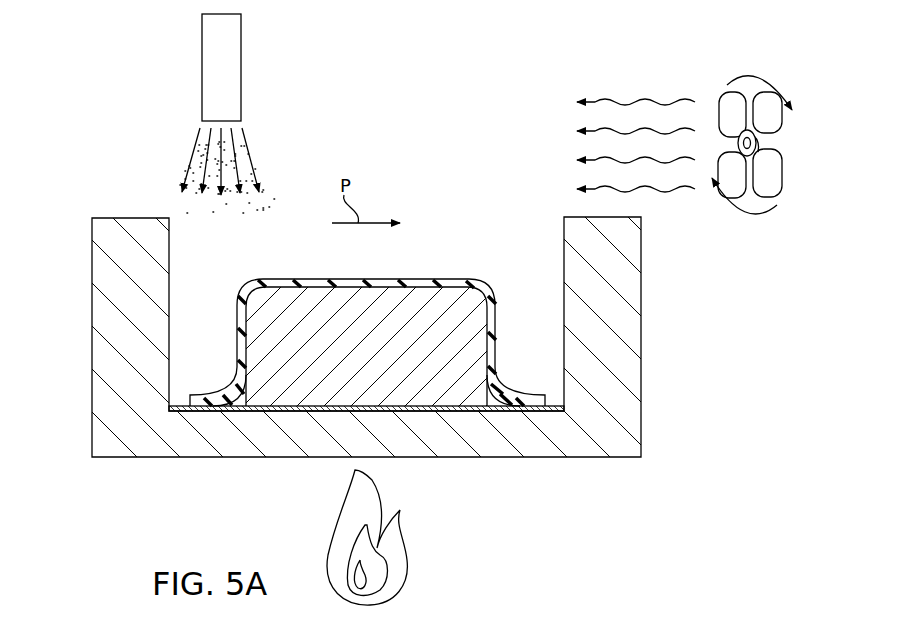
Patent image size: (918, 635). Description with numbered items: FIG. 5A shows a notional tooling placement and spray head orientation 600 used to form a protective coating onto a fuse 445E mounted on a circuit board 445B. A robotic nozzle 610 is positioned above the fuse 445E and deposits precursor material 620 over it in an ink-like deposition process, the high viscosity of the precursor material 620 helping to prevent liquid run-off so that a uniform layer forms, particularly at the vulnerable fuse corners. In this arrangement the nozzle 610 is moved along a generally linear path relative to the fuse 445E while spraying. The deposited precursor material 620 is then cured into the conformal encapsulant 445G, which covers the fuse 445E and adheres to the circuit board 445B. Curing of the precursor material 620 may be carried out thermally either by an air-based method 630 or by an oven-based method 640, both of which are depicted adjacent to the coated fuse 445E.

The coating system 600 is at (117, 115).
The robotic nozzle 610 is at (200, 62).
The precursor material 620 is at (273, 145).
The air-based curing 630 is at (773, 75).
The oven-based curing 640 is at (407, 560).
The fuse 445E is at (392, 358).
The encapsulant 445G is at (212, 391).
The circuit board 445B is at (543, 401).